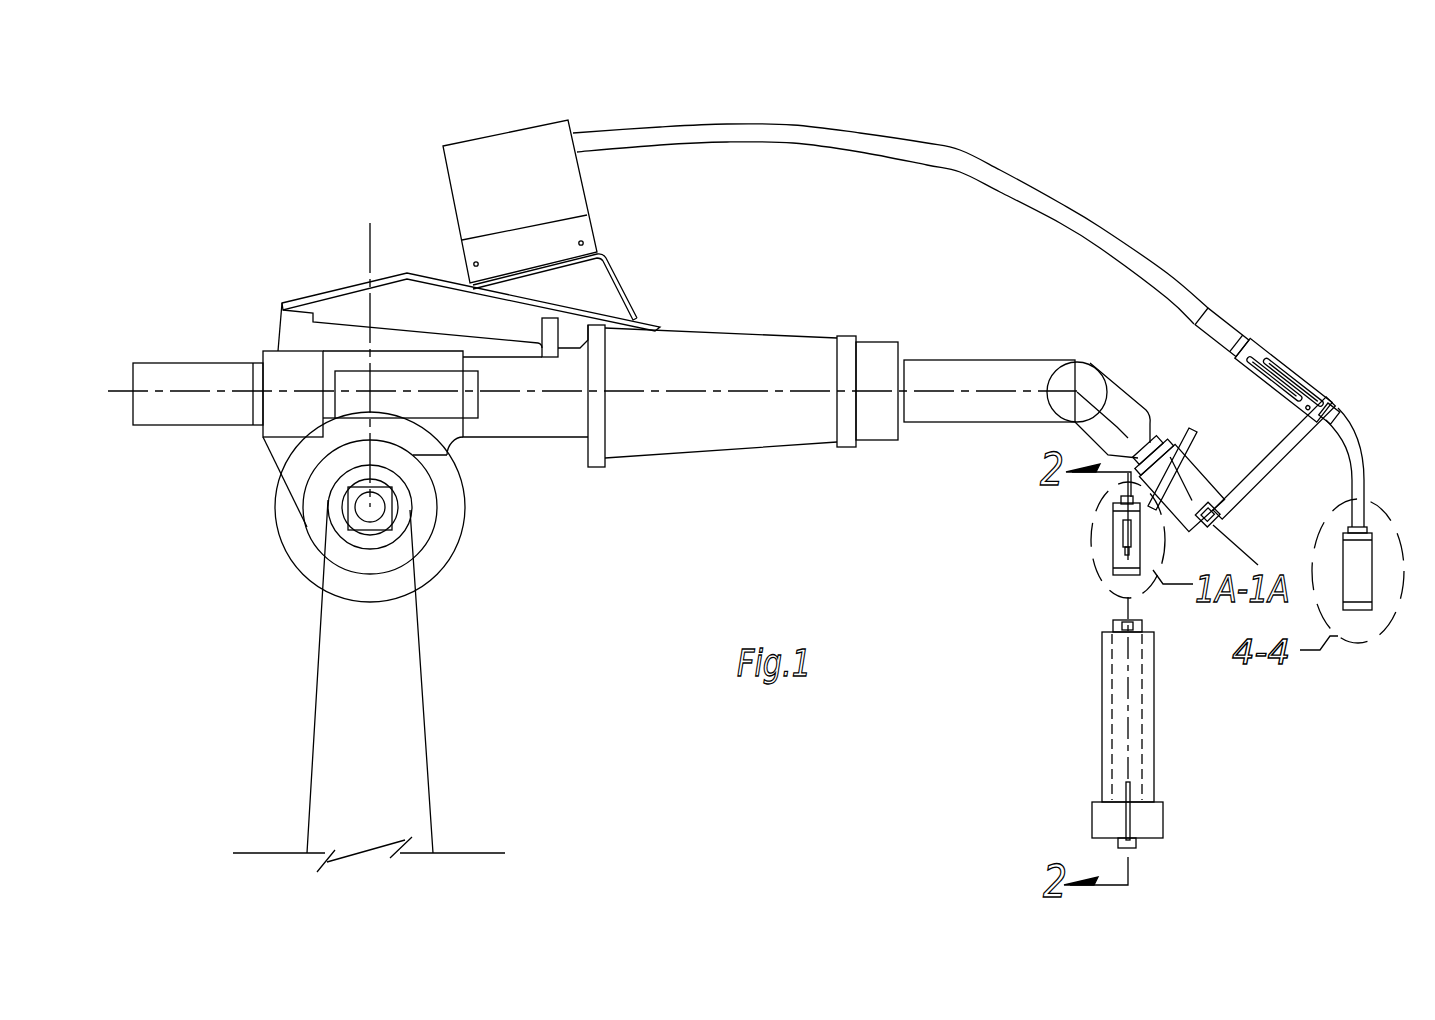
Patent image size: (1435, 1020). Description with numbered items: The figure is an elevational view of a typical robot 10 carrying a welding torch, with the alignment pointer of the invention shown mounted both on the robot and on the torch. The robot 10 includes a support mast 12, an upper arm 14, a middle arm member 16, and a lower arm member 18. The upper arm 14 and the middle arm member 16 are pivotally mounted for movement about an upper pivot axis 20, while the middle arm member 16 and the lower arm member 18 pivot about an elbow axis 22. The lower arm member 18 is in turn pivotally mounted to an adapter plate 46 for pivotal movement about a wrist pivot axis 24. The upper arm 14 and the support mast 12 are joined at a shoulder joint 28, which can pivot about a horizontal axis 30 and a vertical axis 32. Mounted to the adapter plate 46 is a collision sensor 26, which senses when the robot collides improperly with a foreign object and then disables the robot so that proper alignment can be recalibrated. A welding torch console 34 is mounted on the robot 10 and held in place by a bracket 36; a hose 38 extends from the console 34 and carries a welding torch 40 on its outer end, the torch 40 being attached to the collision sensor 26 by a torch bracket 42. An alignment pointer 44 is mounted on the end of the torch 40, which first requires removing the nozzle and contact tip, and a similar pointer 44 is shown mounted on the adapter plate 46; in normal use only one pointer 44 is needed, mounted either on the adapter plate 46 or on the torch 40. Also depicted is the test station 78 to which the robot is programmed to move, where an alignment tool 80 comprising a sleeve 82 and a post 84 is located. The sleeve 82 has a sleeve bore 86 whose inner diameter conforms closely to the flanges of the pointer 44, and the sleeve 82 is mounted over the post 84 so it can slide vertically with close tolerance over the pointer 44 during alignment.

The robot 10 is at (314, 197).
The support mast 12 is at (318, 677).
The upper arm 14 is at (725, 334).
The middle arm member 16 is at (977, 362).
The lower arm member 18 is at (1118, 386).
The upper pivot axis 20 is at (880, 388).
The elbow axis 22 is at (1085, 373).
The wrist pivot axis 24 is at (1124, 412).
The collision sensor 26 is at (1210, 490).
The shoulder joint 28 is at (258, 499).
The horizontal axis 30 is at (384, 503).
The vertical axis 32 is at (372, 242).
The welding torch console 34 is at (483, 136).
The bracket 36 is at (617, 278).
The hose 38 is at (958, 152).
The welding torch 40 is at (1362, 413).
The torch bracket 42 is at (1281, 438).
The alignment pointer 44 is at (1112, 543).
The adapter plate 46 is at (1114, 493).
The test station 78 is at (1064, 709).
The alignment tool 80 is at (1092, 762).
The sleeve 82 is at (1155, 735).
The post 84 is at (1133, 694).
The sleeve bore 86 is at (1111, 658).